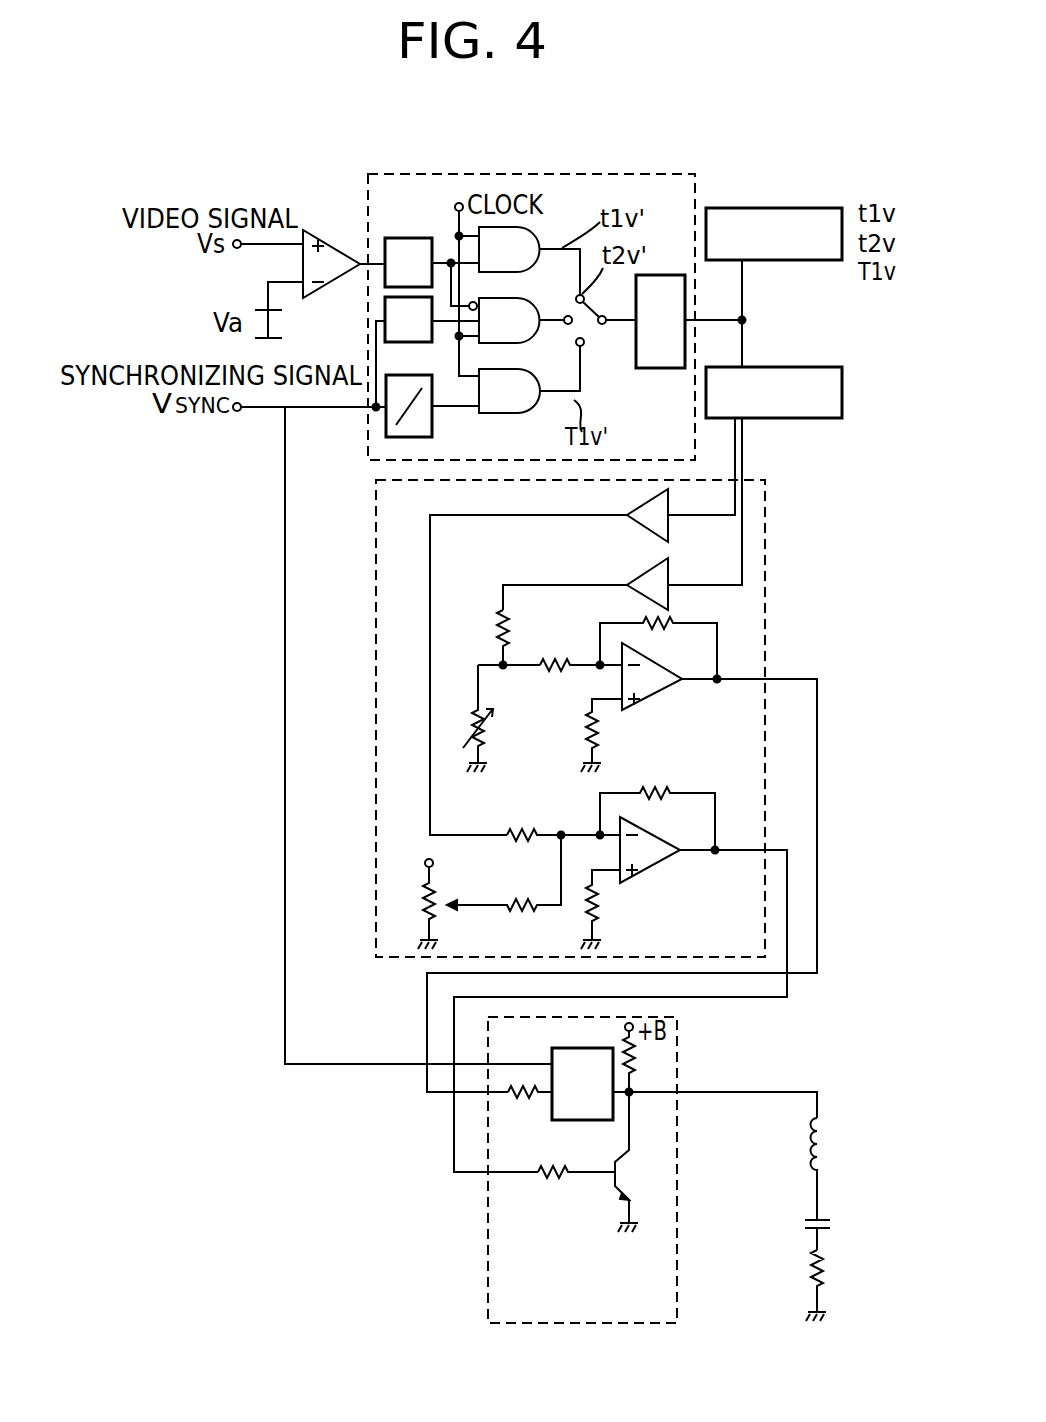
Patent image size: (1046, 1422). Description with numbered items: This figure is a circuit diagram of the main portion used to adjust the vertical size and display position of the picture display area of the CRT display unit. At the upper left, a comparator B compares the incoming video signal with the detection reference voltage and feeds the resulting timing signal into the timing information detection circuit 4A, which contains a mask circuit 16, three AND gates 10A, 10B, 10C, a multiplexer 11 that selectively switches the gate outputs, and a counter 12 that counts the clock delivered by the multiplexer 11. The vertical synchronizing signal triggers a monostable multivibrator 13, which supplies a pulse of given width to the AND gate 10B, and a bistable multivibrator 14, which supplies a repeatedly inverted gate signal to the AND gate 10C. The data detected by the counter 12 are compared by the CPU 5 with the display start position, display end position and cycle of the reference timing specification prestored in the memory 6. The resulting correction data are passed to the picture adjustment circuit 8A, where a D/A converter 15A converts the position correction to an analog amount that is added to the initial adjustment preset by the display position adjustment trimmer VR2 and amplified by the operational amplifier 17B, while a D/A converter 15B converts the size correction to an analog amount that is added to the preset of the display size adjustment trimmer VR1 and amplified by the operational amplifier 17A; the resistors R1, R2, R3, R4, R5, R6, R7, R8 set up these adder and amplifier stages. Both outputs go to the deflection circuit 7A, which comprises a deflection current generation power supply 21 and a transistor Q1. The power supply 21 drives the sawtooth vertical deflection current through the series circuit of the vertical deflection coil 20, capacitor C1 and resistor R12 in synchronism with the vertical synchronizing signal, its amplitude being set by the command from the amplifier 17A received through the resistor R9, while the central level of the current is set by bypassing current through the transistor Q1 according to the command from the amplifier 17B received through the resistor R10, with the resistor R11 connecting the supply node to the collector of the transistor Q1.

The comparator (video signal amplifier) B is at (318, 231).
The timing information detection circuit 4A is at (482, 172).
The mask circuit 16 is at (396, 240).
The monostable multivibrator 13 is at (388, 342).
The bistable multivibrator 14 is at (432, 433).
The AND gate 10A is at (541, 240).
The AND gate 10B is at (510, 299).
The AND gate 10C is at (512, 370).
The multiplexer 11 is at (596, 330).
The counter 12 is at (669, 275).
The memory 6 is at (834, 207).
The CPU 5 is at (833, 367).
The picture adjustment circuit 8A is at (376, 640).
The D/A converter 15A is at (604, 520).
The D/A converter 15B is at (682, 572).
The resistor R1 is at (470, 618).
The resistor R2 is at (558, 652).
The resistor R3 is at (683, 623).
The resistor R4 is at (614, 740).
The resistor R5 is at (519, 827).
The resistor R6 is at (670, 780).
The resistor R7 is at (608, 912).
The resistor R8 is at (530, 908).
The resistor R9 is at (528, 1108).
The resistor R10 is at (573, 1190).
The resistor R11 is at (650, 1061).
The resistor R12 is at (840, 1277).
The picture display size adjustment trimmer VR1 is at (493, 718).
The picture display position adjustment trimmer VR2 is at (444, 890).
The operational amplifier 17A is at (655, 665).
The operational amplifier 17B is at (652, 836).
The deflection circuit 7A is at (677, 1213).
The deflection current generation power supply 21 is at (580, 1120).
The transistor Q1 is at (639, 1162).
The vertical deflection coil 20 is at (840, 1145).
The capacitor C1 is at (840, 1230).